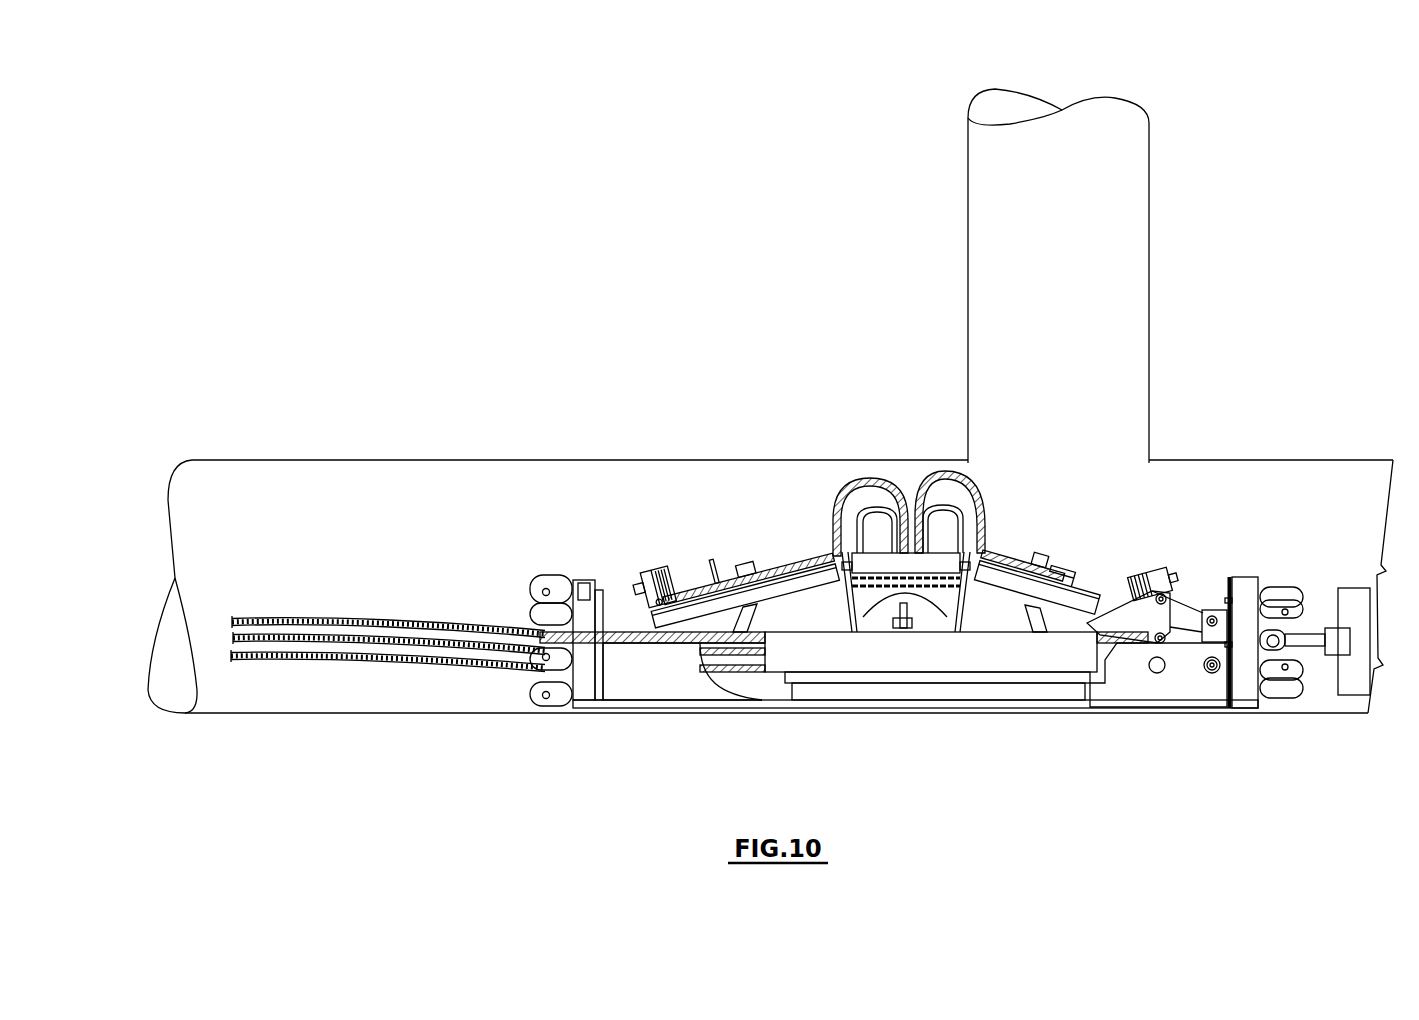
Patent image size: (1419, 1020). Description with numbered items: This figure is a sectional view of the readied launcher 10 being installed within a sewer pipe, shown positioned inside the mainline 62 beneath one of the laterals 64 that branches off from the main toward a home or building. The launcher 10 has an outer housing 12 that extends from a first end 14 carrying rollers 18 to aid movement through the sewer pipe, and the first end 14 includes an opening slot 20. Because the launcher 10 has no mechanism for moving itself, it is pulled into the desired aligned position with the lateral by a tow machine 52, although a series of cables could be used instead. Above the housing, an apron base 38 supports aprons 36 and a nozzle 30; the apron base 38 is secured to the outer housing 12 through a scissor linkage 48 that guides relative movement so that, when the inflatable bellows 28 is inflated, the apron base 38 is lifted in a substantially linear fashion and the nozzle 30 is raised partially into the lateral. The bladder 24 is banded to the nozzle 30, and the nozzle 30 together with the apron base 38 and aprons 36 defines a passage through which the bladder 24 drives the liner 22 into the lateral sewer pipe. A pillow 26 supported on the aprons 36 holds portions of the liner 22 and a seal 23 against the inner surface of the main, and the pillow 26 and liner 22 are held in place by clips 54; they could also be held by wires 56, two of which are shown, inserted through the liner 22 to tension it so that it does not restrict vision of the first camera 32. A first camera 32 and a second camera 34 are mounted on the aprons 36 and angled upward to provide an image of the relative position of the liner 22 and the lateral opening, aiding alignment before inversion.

The launcher assembly 10 is at (1112, 501).
The outer housing 12 is at (650, 690).
The first end 14 is at (590, 685).
The rollers 18 is at (532, 586).
The opening slot 20 is at (609, 552).
The liner 22 is at (980, 520).
The seal 23 is at (1040, 555).
The bladder 24 is at (953, 497).
The pillow 26 is at (760, 578).
The bellows 28 is at (870, 690).
The nozzle 30 is at (945, 597).
The first camera 32 is at (655, 578).
The second camera 34 is at (1160, 572).
The aprons 36 is at (735, 617).
The apron base 38 is at (780, 650).
The scissor linkage 48 is at (1199, 571).
The tow machine 52 is at (1350, 690).
The clips 54 is at (1065, 560).
The wires 56 is at (701, 584).
The mainline 62 is at (545, 470).
The laterals 64 is at (1127, 307).